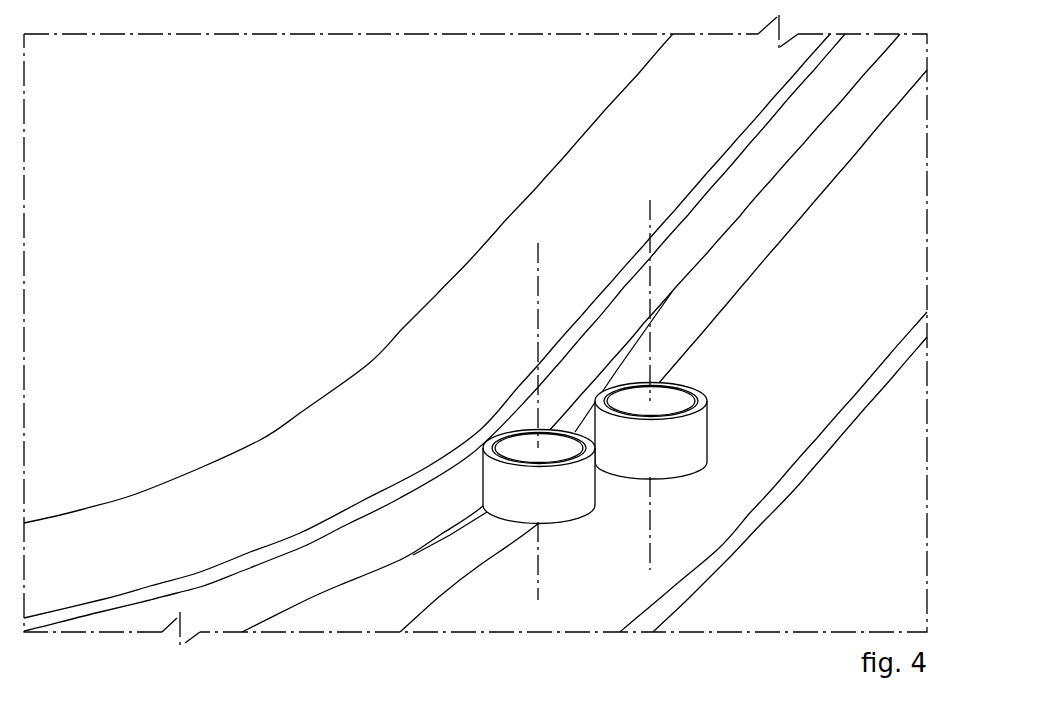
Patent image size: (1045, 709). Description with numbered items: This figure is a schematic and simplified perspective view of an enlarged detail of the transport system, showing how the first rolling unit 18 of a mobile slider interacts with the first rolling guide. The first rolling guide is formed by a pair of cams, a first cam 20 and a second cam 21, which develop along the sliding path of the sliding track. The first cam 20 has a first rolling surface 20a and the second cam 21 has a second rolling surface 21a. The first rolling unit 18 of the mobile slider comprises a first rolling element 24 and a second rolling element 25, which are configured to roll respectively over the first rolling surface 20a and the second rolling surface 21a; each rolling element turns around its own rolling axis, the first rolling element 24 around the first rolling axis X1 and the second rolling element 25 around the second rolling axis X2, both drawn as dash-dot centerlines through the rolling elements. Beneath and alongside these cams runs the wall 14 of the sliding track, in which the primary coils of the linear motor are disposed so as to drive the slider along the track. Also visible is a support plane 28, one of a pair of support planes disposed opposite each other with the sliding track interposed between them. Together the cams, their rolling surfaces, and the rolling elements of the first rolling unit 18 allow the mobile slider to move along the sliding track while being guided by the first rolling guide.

The wall 14 is at (446, 372).
The first rolling unit 18 is at (660, 520).
The first cam 20 is at (795, 189).
The first rolling surface 20a is at (719, 278).
The second cam 21 is at (752, 172).
The second rolling surface 21a is at (438, 512).
The first rolling element 24 is at (683, 439).
The second rolling element 25 is at (548, 498).
The support plane 28 is at (728, 496).
The first rolling axis X1 is at (650, 215).
The second rolling axis X2 is at (538, 282).